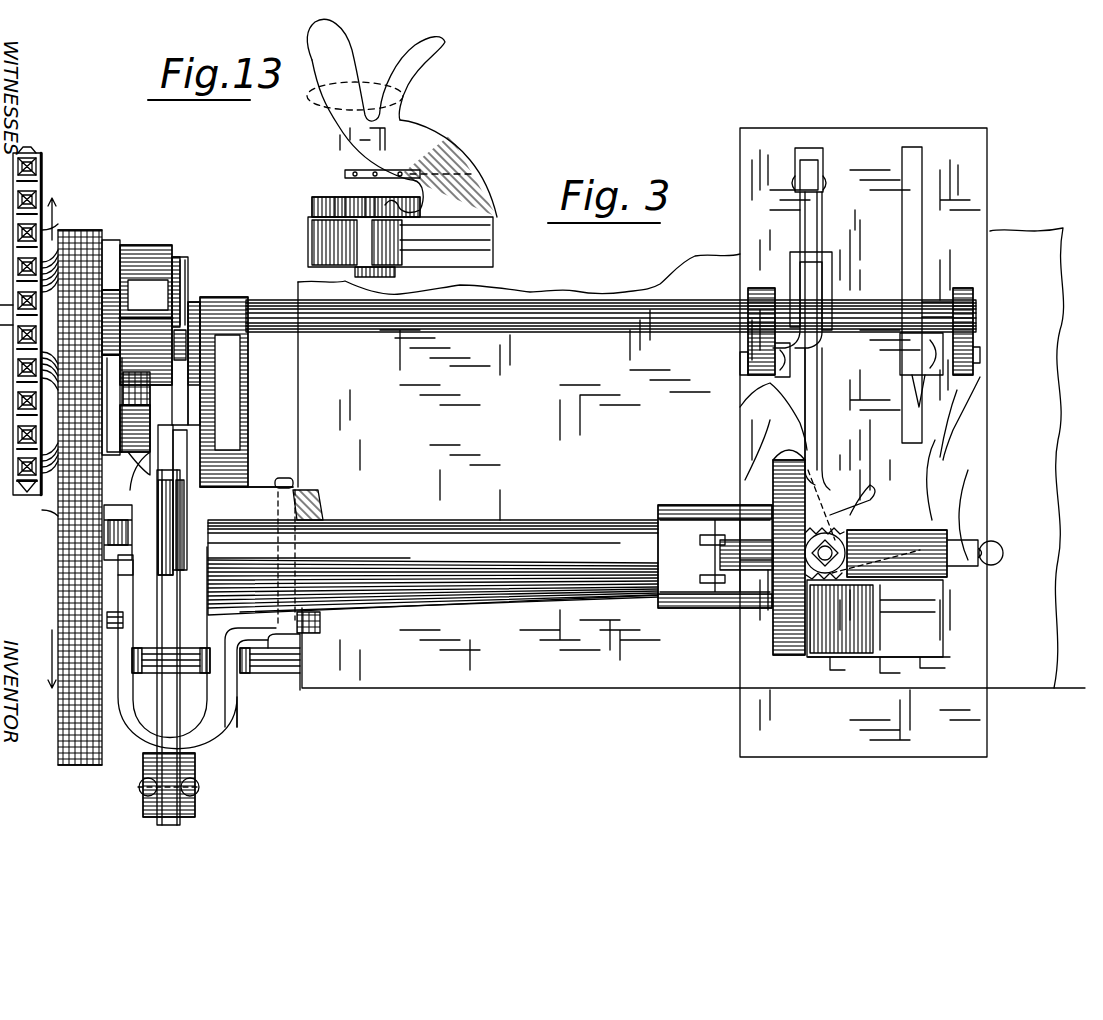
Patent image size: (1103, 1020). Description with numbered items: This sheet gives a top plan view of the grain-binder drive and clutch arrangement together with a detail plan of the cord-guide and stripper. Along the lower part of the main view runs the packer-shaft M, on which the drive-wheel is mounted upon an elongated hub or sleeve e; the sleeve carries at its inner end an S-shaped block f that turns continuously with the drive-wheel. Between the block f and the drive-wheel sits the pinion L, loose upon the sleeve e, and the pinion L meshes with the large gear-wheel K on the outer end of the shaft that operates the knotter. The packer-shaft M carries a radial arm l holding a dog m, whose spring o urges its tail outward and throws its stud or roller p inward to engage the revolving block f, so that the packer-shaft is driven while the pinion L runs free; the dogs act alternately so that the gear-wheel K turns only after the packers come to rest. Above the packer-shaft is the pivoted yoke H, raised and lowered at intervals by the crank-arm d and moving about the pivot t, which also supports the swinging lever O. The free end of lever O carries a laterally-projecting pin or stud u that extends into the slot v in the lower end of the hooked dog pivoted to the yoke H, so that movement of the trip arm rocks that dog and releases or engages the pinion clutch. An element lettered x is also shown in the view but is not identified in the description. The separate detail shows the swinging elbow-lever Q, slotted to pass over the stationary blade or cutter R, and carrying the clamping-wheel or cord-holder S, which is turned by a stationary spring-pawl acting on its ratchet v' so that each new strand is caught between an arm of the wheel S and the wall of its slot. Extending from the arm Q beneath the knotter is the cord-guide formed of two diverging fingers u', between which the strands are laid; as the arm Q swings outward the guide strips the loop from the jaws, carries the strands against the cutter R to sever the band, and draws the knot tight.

In FIG. 3, the gear-wheel K is at (60, 562).
In FIG. 3, the pinion L is at (104, 242).
In FIG. 3, the sleeve e is at (111, 322).
In FIG. 3, the S-shaped block f is at (146, 315).
In FIG. 3, the dog m is at (184, 266).
In FIG. 3, the spring o is at (188, 300).
In FIG. 3, the radial arm l is at (198, 302).
In FIG. 3, the packer-shaft M is at (611, 304).
In FIG. 3, the stud or roller p is at (128, 424).
In FIG. 3, the rod x is at (175, 458).
In FIG. 3, the crank-arm d is at (186, 515).
In FIG. 3, the pin or stud u is at (120, 532).
In FIG. 3, the yoke H is at (170, 690).
In FIG. 3, the swinging lever O is at (123, 612).
In FIG. 3, the pivot t is at (198, 786).
In FIG. 13, the elbow-lever Q is at (400, 242).
In FIG. 13, the ratchet v' is at (386, 275).
In FIG. 13, the clamping-wheel or cord-holder S is at (340, 200).
In FIG. 13, the blade or cutter R is at (360, 170).
In FIG. 13, the diverging fingers u' is at (402, 118).
In FIG. 13, the slot v is at (373, 141).